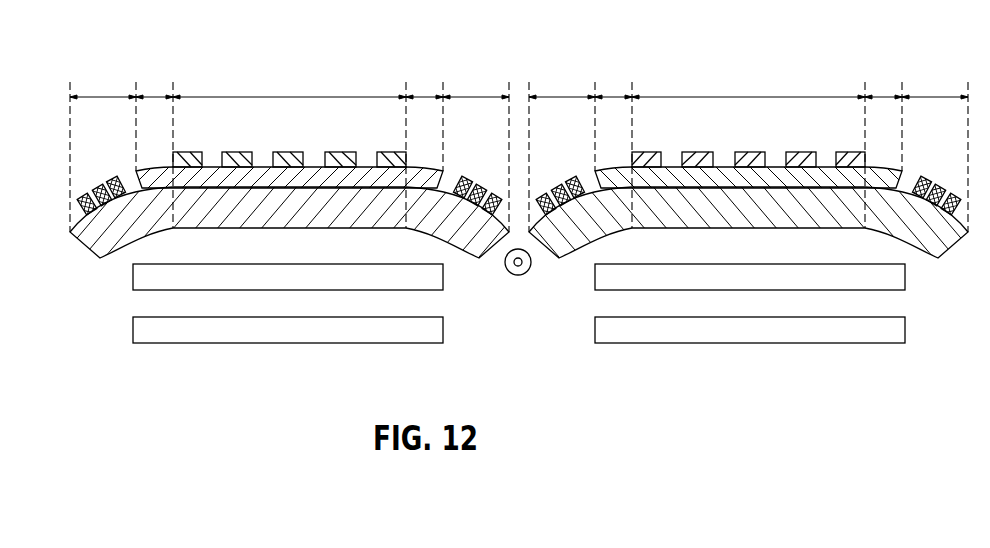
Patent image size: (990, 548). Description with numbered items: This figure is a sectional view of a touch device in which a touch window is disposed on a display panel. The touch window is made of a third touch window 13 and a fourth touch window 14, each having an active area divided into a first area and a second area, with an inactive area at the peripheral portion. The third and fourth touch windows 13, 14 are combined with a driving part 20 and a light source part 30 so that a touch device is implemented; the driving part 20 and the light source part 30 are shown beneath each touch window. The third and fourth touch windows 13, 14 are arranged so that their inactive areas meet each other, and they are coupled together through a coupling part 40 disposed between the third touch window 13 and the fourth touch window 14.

The third touch window 13 is at (177, 37).
The fourth touch window 14 is at (687, 37).
The driving part 20 is at (133, 273).
The light source part 30 is at (133, 326).
The coupling part 40 is at (517, 275).